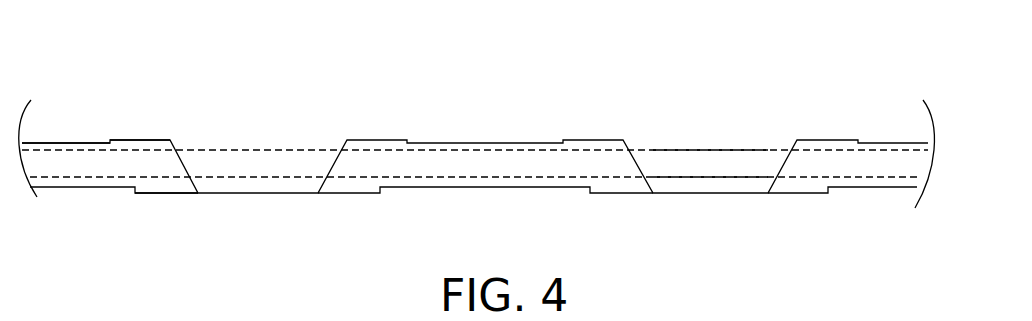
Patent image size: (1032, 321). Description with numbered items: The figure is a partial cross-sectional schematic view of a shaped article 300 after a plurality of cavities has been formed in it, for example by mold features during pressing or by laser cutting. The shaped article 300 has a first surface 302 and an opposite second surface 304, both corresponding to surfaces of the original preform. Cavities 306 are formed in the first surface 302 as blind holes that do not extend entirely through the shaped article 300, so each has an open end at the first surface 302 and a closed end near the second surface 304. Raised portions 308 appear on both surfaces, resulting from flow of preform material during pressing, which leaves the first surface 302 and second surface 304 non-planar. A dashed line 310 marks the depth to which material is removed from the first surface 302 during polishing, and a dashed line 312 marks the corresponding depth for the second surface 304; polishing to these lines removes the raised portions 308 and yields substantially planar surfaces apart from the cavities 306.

The shaped article 300 is at (125, 103).
The first surface 302 is at (477, 143).
The second surface 304 is at (485, 187).
The cavities 306 is at (252, 157).
The raised portions 308 is at (153, 139).
The dashed line 310 is at (700, 150).
The dashed line 312 is at (693, 175).